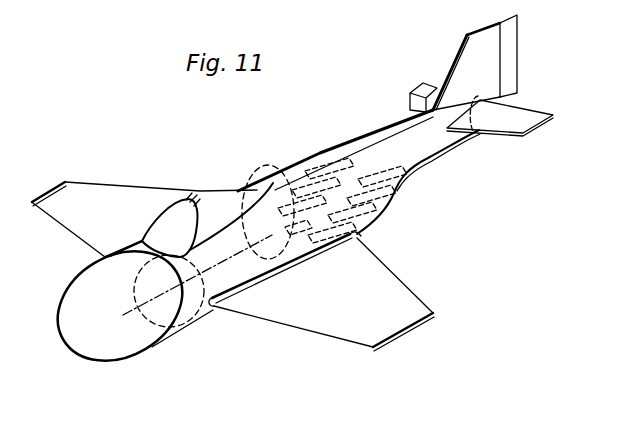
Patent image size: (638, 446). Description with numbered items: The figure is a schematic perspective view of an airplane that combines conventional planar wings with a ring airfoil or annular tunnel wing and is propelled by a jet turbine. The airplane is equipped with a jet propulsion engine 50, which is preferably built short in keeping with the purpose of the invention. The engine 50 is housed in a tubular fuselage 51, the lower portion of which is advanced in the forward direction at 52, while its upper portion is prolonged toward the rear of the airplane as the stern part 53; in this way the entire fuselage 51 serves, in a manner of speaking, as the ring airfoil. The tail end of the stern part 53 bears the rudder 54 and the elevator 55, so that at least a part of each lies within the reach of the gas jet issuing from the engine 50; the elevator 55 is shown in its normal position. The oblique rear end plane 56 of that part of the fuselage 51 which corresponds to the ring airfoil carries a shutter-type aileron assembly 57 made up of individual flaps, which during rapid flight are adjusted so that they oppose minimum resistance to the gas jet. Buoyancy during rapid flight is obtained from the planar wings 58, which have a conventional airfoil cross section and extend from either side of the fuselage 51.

The jet propulsion engine 50 is at (185, 313).
The tubular fuselage 51 is at (213, 312).
The advanced lower portion of fuselage 52 is at (100, 352).
The stern part 53 is at (403, 132).
The rudder 54 is at (510, 62).
The elevator 55 is at (547, 117).
The oblique rear end plane 56 is at (393, 195).
The aileron assembly 57 is at (373, 213).
The planar wings 58 is at (122, 198).